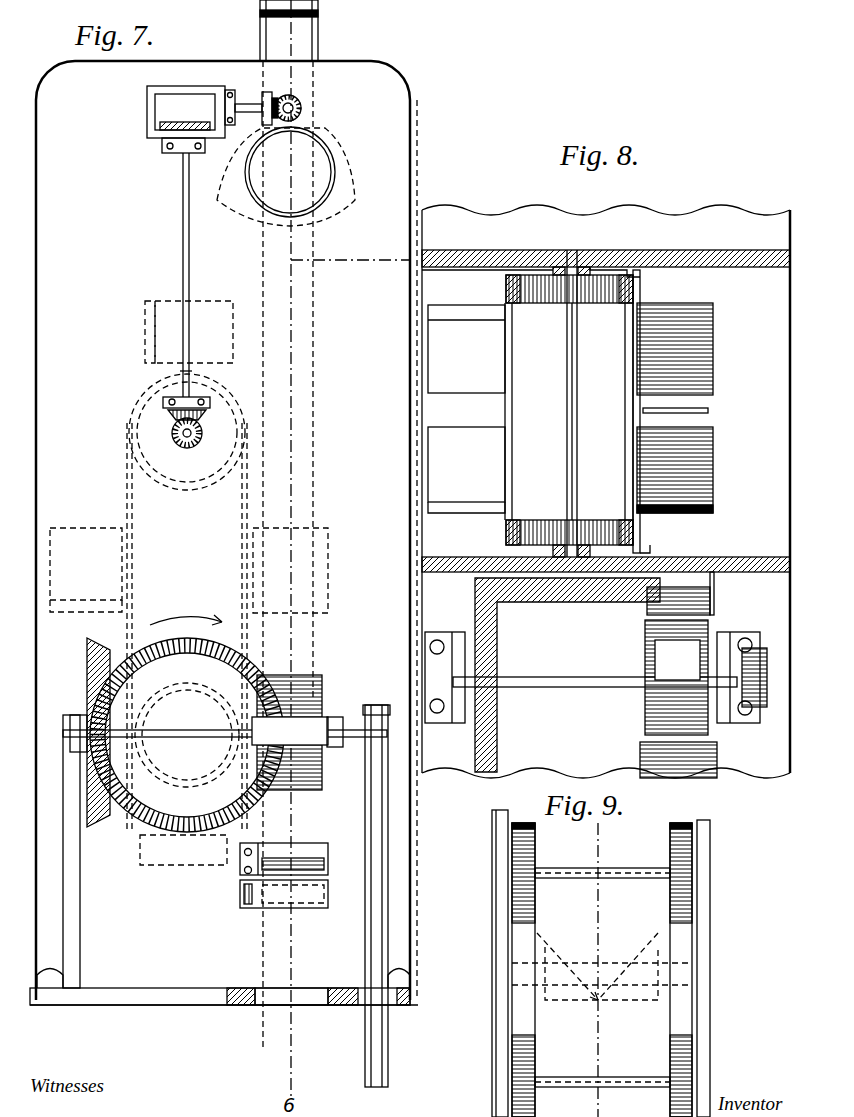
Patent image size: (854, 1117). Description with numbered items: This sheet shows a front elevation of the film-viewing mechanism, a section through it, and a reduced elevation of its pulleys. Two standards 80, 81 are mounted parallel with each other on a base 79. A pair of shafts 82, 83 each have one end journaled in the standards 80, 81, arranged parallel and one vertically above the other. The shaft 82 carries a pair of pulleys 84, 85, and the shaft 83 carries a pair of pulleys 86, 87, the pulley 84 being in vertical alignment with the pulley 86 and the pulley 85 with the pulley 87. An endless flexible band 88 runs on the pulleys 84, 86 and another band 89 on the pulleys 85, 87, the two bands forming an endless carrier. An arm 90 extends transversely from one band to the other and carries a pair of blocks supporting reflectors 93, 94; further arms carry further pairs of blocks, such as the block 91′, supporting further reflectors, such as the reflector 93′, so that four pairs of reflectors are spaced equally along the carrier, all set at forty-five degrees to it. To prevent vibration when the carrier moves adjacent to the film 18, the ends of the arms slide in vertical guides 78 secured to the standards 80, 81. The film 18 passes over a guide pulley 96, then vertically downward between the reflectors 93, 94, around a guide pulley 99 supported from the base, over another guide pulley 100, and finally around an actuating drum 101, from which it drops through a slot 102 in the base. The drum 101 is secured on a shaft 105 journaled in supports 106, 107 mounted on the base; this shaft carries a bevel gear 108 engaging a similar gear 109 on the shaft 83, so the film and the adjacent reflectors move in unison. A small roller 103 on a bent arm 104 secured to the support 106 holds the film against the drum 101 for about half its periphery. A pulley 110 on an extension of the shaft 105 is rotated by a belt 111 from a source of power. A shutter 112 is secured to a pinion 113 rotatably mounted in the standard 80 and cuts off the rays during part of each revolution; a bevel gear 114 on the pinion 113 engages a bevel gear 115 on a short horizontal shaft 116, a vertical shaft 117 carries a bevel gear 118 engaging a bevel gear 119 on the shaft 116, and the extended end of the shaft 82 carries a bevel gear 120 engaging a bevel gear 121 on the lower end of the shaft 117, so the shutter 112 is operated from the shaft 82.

In FIG. 8, the film 18 is at (702, 411).
In FIG. 8, the vertical guides 78 is at (641, 281).
In FIG. 7, the base 79 is at (140, 995).
In FIG. 7, the standard 80 is at (226, 530).
In FIG. 8, the standard 80 is at (760, 566).
In FIG. 9, the standard 80 is at (495, 969).
In FIG. 8, the standard 81 is at (675, 263).
In FIG. 9, the standard 81 is at (707, 969).
In FIG. 7, the shaft 82 is at (185, 447).
In FIG. 9, the shaft 82 is at (640, 879).
In FIG. 8, the shaft 83 is at (572, 438).
In FIG. 9, the shaft 83 is at (575, 1075).
In FIG. 7, the pulley 84 is at (213, 492).
In FIG. 9, the pulley 84 is at (528, 869).
In FIG. 9, the pulley 85 is at (673, 840).
In FIG. 7, the pulley 86 is at (218, 691).
In FIG. 8, the pulley 86 is at (598, 530).
In FIG. 9, the pulley 86 is at (530, 1056).
In FIG. 8, the pulley 87 is at (608, 306).
In FIG. 9, the pulley 87 is at (680, 1052).
In FIG. 7, the endless flexible band 88 is at (127, 497).
In FIG. 8, the endless flexible band 88 is at (512, 521).
In FIG. 9, the endless flexible band 88 is at (526, 948).
In FIG. 8, the endless flexible band 89 is at (512, 308).
In FIG. 9, the endless flexible band 89 is at (675, 1005).
In FIG. 7, the arm 90 is at (258, 568).
In FIG. 8, the arm 90 is at (634, 409).
In FIG. 7, the block 91′ is at (157, 866).
In FIG. 7, the reflector 93 is at (303, 533).
In FIG. 8, the reflector 93 is at (696, 479).
In FIG. 7, the reflector 93′ is at (222, 847).
In FIG. 8, the reflector 94 is at (706, 379).
In FIG. 7, the guide pulley 96 is at (320, 58).
In FIG. 7, the guide pulley 99 is at (300, 898).
In FIG. 7, the guide pulley 100 is at (273, 850).
In FIG. 8, the guide pulley 100 is at (672, 592).
In FIG. 7, the actuating drum 101 is at (320, 676).
In FIG. 8, the actuating drum 101 is at (676, 677).
In FIG. 7, the slot 102 is at (300, 1003).
In FIG. 8, the small roller 103 is at (690, 754).
In FIG. 7, the bent arm 104 is at (305, 730).
In FIG. 8, the bent arm 104 is at (720, 776).
In FIG. 7, the shaft 105 is at (205, 740).
In FIG. 8, the shaft 105 is at (570, 668).
In FIG. 7, the support 106 is at (70, 952).
In FIG. 8, the support 106 is at (455, 641).
In FIG. 7, the support 107 is at (338, 952).
In FIG. 8, the support 107 is at (722, 641).
In FIG. 7, the bevel gear 108 is at (90, 680).
In FIG. 8, the bevel gear 108 is at (538, 758).
In FIG. 7, the bevel gear 109 is at (135, 832).
In FIG. 8, the bevel gear 109 is at (606, 604).
In FIG. 8, the pulley 110 is at (757, 708).
In FIG. 7, the belt 111 is at (376, 712).
In FIG. 7, the shutter 112 is at (347, 192).
In FIG. 7, the pinion 113 is at (300, 104).
In FIG. 7, the bevel gear 114 is at (302, 108).
In FIG. 7, the bevel gear 115 is at (278, 100).
In FIG. 7, the short horizontal shaft 116 is at (245, 102).
In FIG. 7, the vertical shaft 117 is at (190, 264).
In FIG. 7, the bevel gear 118 is at (205, 126).
In FIG. 7, the bevel gear 119 is at (220, 96).
In FIG. 7, the bevel gear 120 is at (205, 446).
In FIG. 7, the bevel gear 121 is at (165, 420).